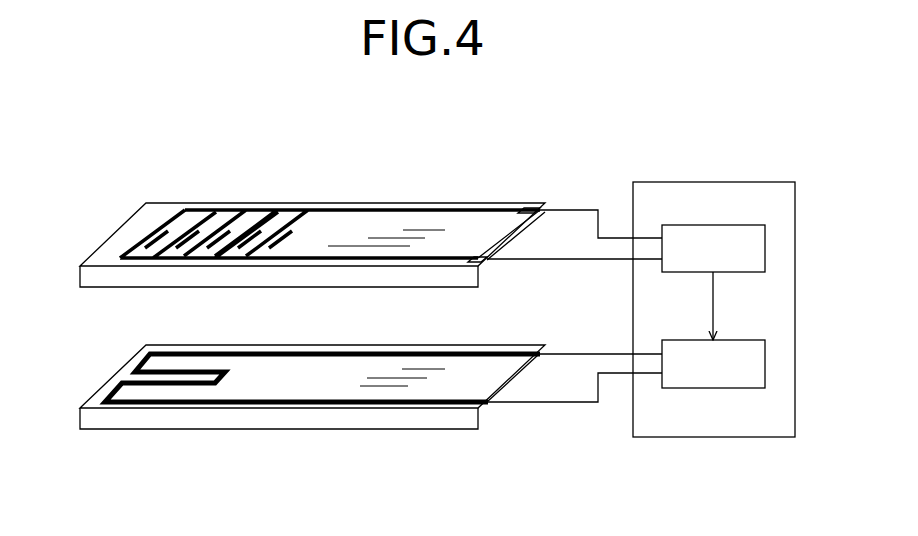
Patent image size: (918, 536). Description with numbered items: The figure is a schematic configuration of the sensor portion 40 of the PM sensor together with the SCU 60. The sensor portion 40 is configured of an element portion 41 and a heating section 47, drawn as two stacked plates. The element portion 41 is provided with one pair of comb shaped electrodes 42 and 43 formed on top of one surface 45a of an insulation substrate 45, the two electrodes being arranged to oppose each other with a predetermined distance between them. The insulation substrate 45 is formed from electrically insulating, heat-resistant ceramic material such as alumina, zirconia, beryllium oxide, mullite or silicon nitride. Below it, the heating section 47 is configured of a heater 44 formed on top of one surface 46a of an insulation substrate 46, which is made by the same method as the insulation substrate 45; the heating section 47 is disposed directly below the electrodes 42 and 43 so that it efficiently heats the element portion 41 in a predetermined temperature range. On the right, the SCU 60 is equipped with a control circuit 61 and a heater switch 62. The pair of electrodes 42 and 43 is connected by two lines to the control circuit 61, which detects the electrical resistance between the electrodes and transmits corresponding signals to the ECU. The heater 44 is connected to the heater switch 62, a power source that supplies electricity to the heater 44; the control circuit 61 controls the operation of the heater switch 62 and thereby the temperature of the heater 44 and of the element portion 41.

The sensor portion 40 is at (562, 152).
The element portion 41 is at (102, 232).
The comb shaped electrode 42 is at (212, 215).
The comb shaped electrode 43 is at (240, 222).
The heater 44 is at (192, 403).
The insulation substrate 45 is at (489, 266).
The one surface of insulation substrate 45a is at (475, 222).
The insulation substrate 46 is at (489, 408).
The one surface of insulation substrate 46a is at (475, 367).
The heating section 47 is at (102, 373).
The SCU 60 is at (775, 182).
The control circuit 61 is at (742, 226).
The heater switch 62 is at (737, 340).